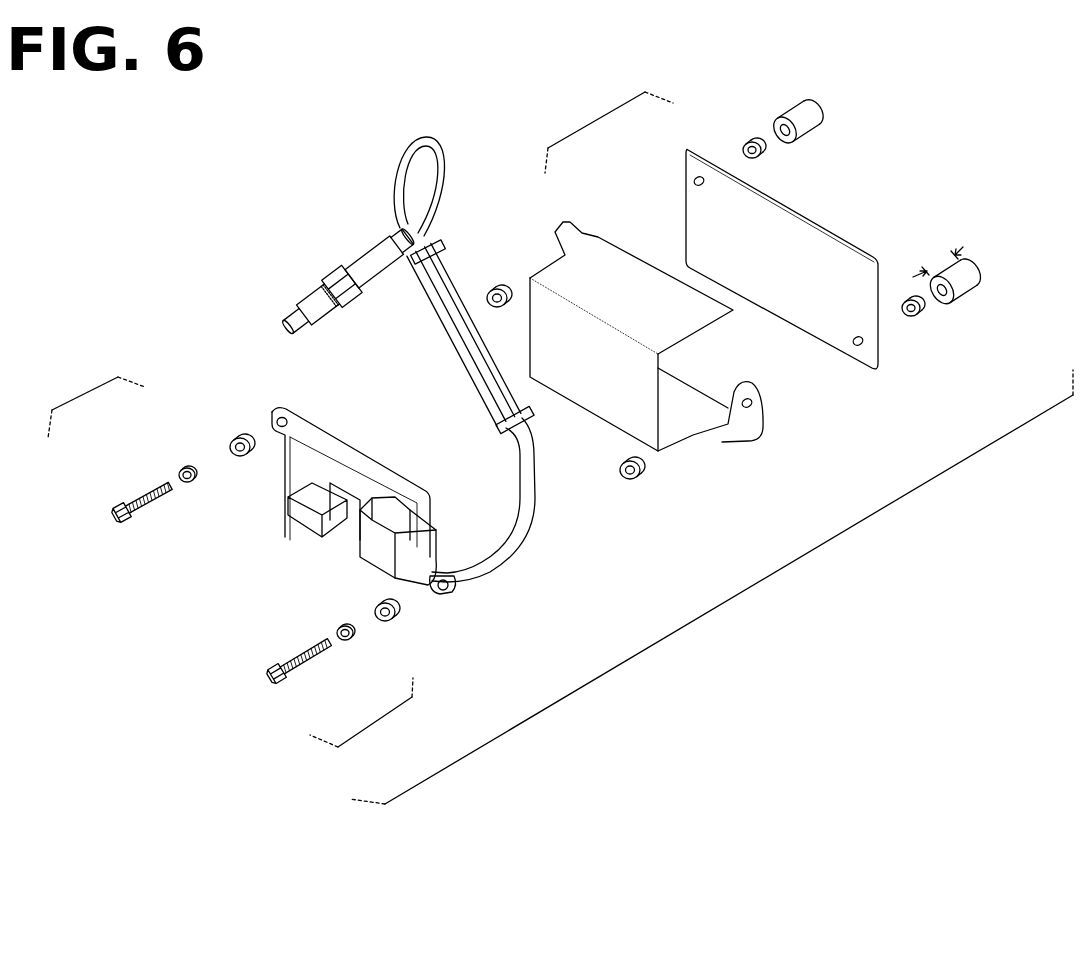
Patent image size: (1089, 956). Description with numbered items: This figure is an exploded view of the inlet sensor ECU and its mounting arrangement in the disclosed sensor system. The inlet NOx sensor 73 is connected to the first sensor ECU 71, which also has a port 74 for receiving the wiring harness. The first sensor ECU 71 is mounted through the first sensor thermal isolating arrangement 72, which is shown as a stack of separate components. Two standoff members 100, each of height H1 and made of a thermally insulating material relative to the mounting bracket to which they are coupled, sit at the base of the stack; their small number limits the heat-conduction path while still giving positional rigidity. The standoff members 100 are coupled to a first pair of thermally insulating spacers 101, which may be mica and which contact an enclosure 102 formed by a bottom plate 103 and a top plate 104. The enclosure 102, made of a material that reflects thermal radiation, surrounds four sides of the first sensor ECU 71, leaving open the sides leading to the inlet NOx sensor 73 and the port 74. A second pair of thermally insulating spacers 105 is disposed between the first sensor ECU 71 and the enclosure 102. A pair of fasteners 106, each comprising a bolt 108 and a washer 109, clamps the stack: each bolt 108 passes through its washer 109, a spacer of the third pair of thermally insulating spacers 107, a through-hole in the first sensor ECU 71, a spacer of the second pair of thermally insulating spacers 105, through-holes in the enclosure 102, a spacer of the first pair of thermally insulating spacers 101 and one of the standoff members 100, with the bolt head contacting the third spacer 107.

The first sensor ECU 71 is at (332, 440).
The first sensor thermal isolating arrangement 72 is at (732, 600).
The inlet NOx sensor 73 is at (360, 263).
The port 74 is at (303, 520).
The standoff members 100 is at (780, 110).
The first pair of thermally insulating spacers 101 is at (745, 140).
The enclosure 102 is at (598, 113).
The bottom plate 103 is at (685, 153).
The top plate 104 is at (590, 232).
The second pair of thermally insulating spacers 105 is at (495, 285).
The pair of fasteners 106 is at (72, 398).
The third pair of thermally insulating spacers 107 is at (235, 438).
The bolt 108 is at (140, 505).
The washer 109 is at (180, 467).
The height H1 is at (956, 253).